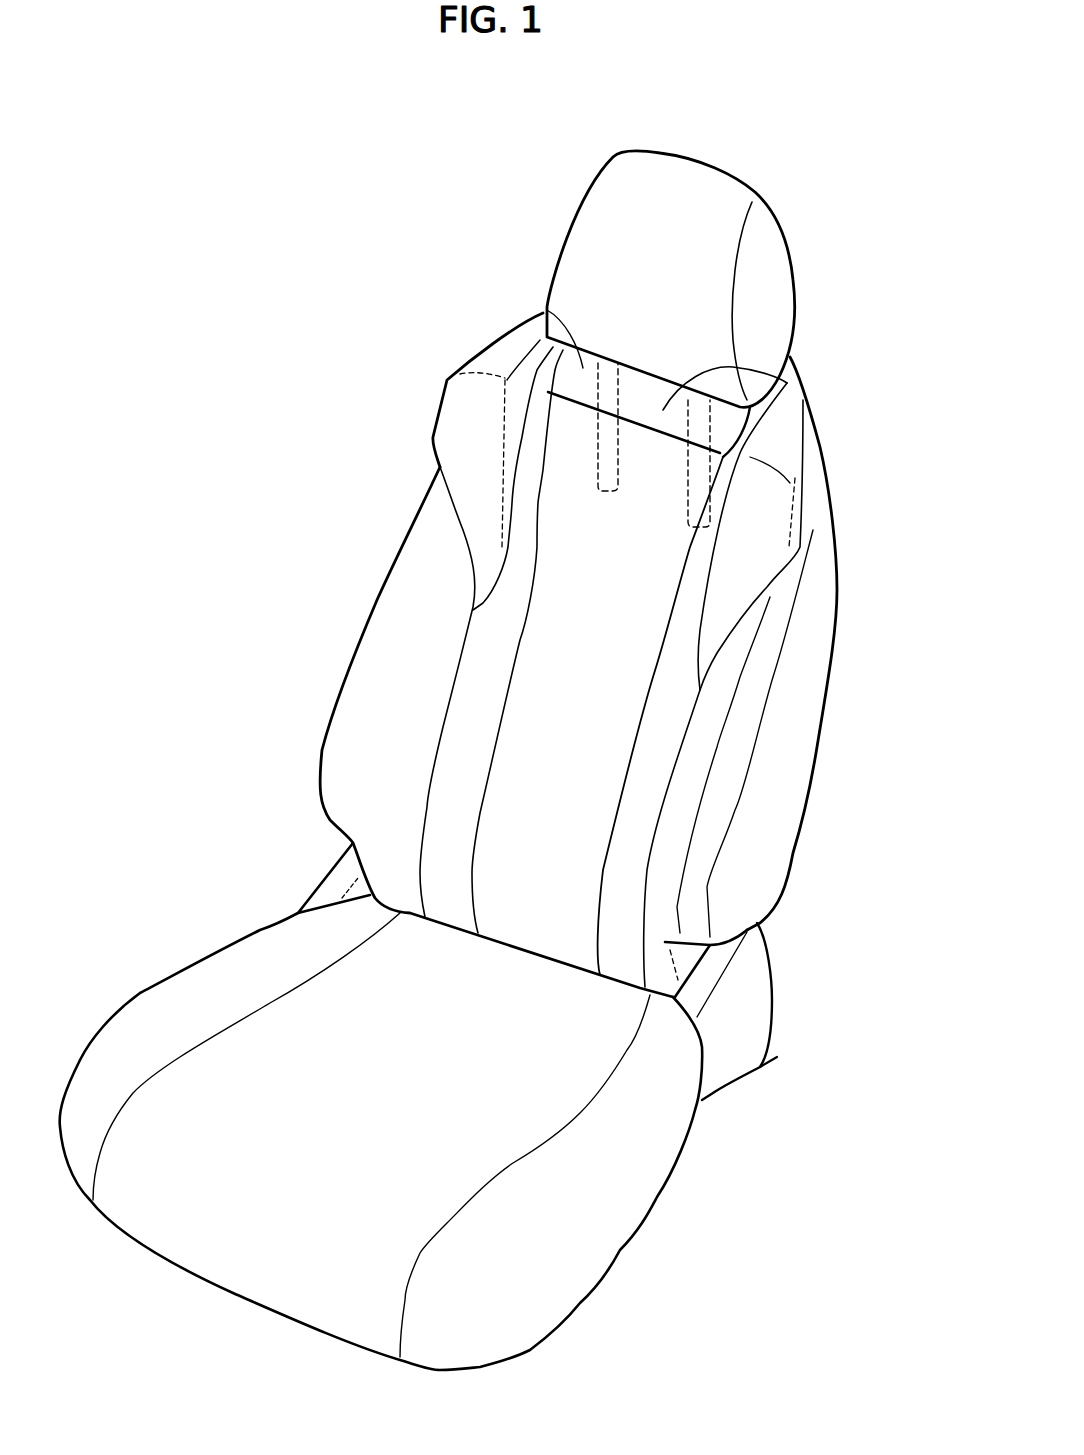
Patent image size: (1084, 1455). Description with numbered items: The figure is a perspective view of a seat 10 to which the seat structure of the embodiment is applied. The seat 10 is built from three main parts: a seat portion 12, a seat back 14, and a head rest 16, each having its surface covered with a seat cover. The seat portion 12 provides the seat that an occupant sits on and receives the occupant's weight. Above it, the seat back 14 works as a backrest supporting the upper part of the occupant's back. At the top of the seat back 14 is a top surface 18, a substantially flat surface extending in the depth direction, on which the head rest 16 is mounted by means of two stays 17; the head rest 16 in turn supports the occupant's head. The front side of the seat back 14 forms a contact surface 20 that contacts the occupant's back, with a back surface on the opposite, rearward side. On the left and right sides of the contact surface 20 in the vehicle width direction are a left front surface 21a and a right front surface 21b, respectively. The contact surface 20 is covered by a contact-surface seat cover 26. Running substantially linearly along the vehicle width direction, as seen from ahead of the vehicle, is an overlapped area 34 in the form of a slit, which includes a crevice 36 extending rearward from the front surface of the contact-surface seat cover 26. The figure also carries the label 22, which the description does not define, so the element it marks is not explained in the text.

The seat 10 is at (820, 174).
The seat portion 12 is at (666, 1201).
The seat back 14 is at (836, 707).
The head rest 16 is at (810, 291).
The stays 17 is at (710, 430).
The top surface 18 is at (547, 310).
The contact surface 20 is at (597, 620).
The left front surface 21a is at (663, 707).
The right front surface 21b is at (482, 669).
The headrest stay holder 22 is at (705, 388).
The contact-surface seat cover 26 is at (565, 738).
The overlapped area 34 is at (575, 410).
The crevice 36 is at (575, 410).